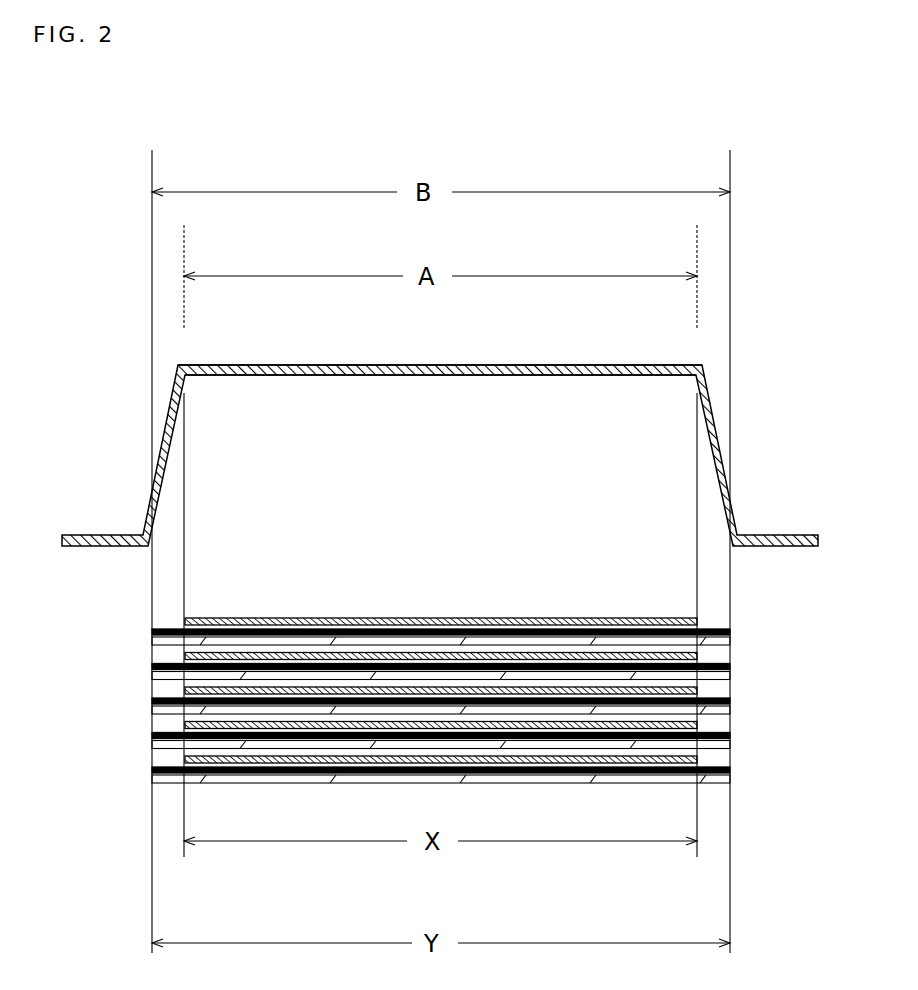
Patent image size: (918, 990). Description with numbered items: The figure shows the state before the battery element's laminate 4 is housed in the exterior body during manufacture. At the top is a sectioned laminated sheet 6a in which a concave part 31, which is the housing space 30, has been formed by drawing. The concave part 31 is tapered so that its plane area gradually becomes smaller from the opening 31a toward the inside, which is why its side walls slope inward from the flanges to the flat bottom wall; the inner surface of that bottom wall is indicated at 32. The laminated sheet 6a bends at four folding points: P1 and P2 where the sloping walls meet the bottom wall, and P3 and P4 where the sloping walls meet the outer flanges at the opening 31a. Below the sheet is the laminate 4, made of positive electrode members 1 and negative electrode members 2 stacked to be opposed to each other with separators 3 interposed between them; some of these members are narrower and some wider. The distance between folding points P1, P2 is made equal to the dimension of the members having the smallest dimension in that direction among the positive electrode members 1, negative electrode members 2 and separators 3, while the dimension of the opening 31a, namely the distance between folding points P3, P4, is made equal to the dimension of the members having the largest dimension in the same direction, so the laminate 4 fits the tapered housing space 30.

The positive electrode member 1 is at (698, 657).
The negative electrode member 2 is at (731, 680).
The separator 3 is at (731, 668).
The laminate 4 is at (456, 738).
The laminated sheet 6a is at (307, 365).
The housing space 30 is at (440, 424).
The concave part 31 is at (557, 420).
The opening 31a is at (325, 537).
The inner surface of top wall 32 is at (415, 377).
The folding point P1 is at (178, 365).
The folding point P2 is at (702, 365).
The folding point P3 is at (143, 535).
The folding point P4 is at (737, 535).